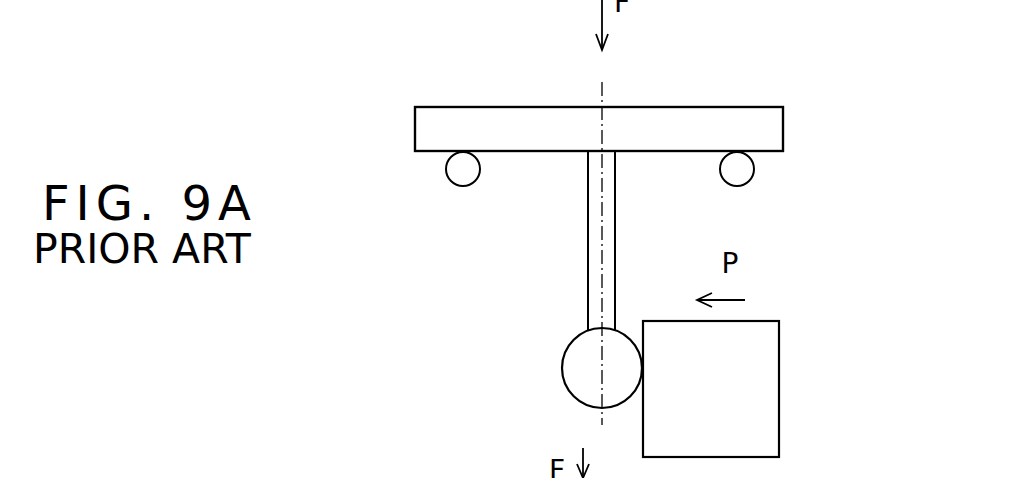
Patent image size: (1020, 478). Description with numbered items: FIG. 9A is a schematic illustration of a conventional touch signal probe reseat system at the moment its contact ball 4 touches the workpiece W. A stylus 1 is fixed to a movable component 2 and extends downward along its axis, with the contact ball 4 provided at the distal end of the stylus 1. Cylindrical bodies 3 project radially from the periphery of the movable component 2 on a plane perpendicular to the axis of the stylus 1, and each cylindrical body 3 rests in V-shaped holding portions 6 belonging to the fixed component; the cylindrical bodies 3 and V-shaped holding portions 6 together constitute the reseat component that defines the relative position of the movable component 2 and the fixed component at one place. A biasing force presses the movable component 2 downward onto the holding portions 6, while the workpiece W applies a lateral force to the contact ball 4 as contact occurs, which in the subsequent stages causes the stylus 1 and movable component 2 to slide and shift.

The stylus 1 is at (597, 253).
The movable component 2 is at (617, 120).
The cylindrical bodies 3 is at (465, 120).
The contact ball 4 is at (590, 368).
The V-shaped holding portions 6 is at (462, 166).
The workpiece W is at (753, 390).